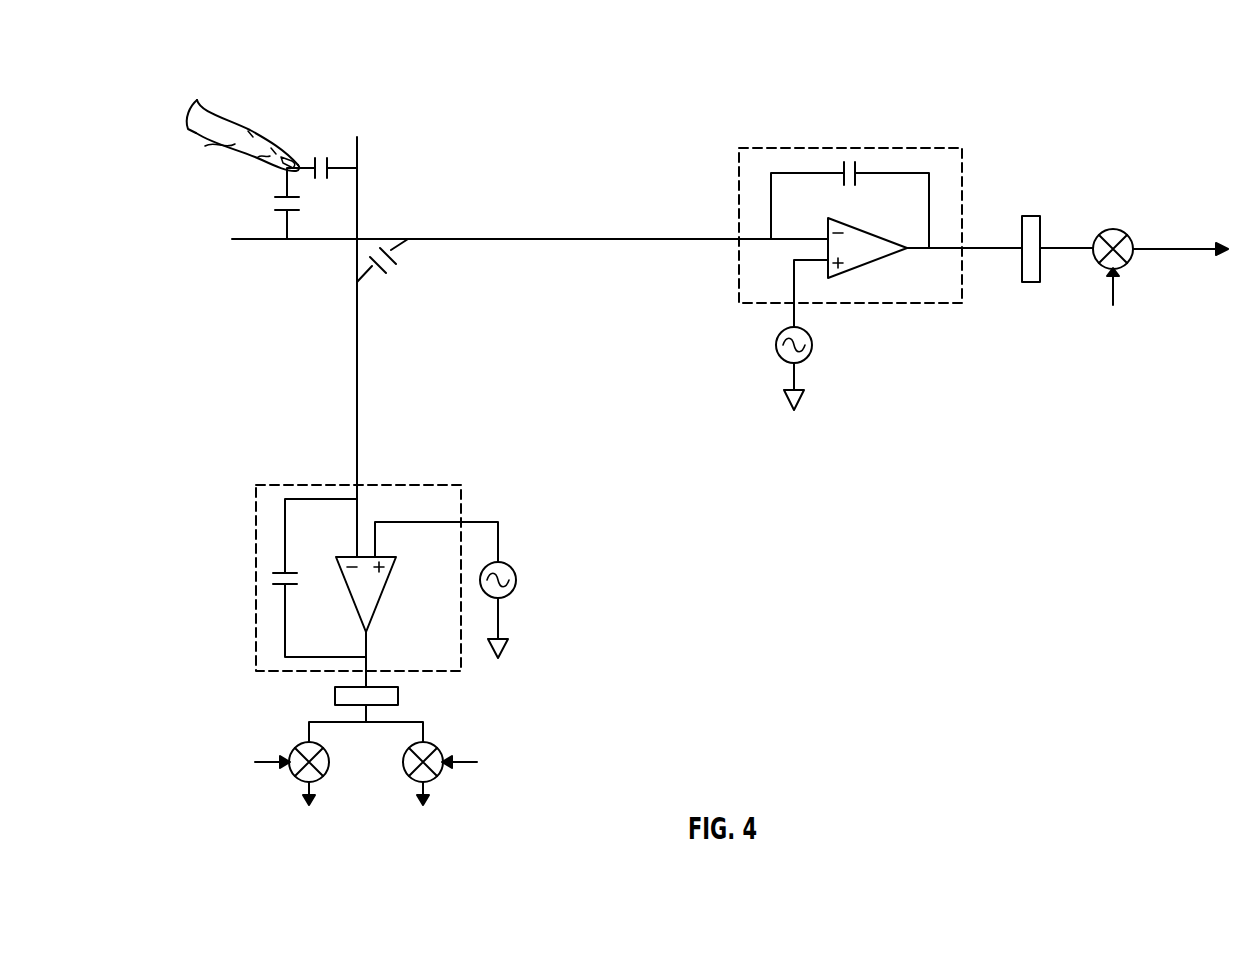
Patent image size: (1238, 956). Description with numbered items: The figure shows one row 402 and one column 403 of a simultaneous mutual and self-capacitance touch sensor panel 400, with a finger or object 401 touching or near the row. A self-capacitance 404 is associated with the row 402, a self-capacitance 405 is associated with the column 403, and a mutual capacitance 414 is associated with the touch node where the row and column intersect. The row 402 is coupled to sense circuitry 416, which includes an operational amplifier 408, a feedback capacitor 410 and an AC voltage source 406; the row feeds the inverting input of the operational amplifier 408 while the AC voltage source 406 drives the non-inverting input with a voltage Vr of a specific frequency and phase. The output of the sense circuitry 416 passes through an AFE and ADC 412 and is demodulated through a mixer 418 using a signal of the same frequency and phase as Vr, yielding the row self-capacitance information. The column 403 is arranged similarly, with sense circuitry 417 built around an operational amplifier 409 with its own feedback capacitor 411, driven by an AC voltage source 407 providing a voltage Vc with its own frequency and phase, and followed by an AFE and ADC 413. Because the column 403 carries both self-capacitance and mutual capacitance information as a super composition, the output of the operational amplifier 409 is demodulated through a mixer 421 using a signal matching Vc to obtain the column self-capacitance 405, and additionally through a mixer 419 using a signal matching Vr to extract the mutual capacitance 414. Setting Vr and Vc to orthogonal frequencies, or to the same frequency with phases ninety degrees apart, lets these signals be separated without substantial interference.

The touch sensor panel 400 is at (286, 84).
The finger or object 401 is at (217, 147).
The row 402 is at (254, 238).
The column 403 is at (360, 155).
The self-capacitance 404 is at (284, 197).
The self-capacitance 405 is at (322, 157).
The AC voltage source 406 is at (812, 345).
The AC voltage source 407 is at (517, 580).
The operational amplifier 408 is at (870, 264).
The operational amplifier 409 is at (381, 592).
The feedback capacitor 410 is at (846, 162).
The feedback capacitor 411 is at (291, 587).
The AFE and ADC 412 is at (1031, 216).
The AFE and ADC 413 is at (399, 698).
The mutual capacitance 414 is at (396, 259).
The sense circuitry 416 is at (896, 147).
The sense circuitry 417 is at (294, 484).
The mixer 418 is at (1113, 229).
The mixer 419 is at (438, 778).
The mixer 421 is at (300, 746).